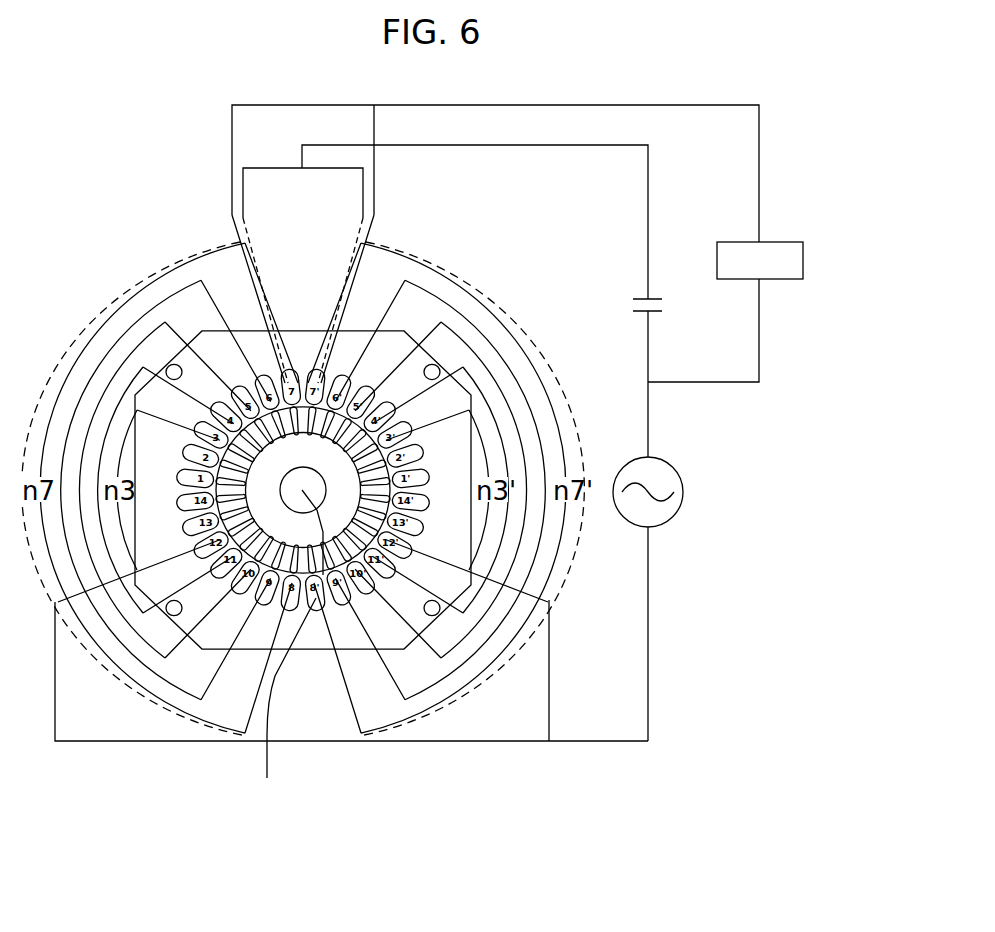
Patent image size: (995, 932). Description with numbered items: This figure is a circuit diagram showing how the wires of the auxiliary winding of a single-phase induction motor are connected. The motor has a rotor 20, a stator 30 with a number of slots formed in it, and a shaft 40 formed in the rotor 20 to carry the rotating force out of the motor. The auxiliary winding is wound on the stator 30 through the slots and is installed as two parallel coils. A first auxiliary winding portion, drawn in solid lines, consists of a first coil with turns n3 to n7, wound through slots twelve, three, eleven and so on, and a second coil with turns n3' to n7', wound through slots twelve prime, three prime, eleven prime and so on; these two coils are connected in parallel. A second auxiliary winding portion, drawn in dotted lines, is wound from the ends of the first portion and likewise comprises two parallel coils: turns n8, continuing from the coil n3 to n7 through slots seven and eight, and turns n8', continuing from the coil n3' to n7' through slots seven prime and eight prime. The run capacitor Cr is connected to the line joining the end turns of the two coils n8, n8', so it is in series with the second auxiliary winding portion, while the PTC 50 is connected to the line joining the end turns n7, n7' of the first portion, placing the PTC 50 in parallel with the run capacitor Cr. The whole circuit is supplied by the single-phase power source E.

The rotor 20 is at (317, 455).
The stator 30 is at (302, 352).
The shaft 40 is at (267, 778).
The PTC 50 is at (788, 242).
The run capacitor Cr is at (627, 377).
The power source E is at (658, 599).
The turns n3 is at (120, 490).
The turns n3' is at (492, 490).
The turns n7 is at (157, 488).
The turns n7' is at (453, 488).
The turns n8 is at (149, 477).
The turns n8' is at (464, 477).